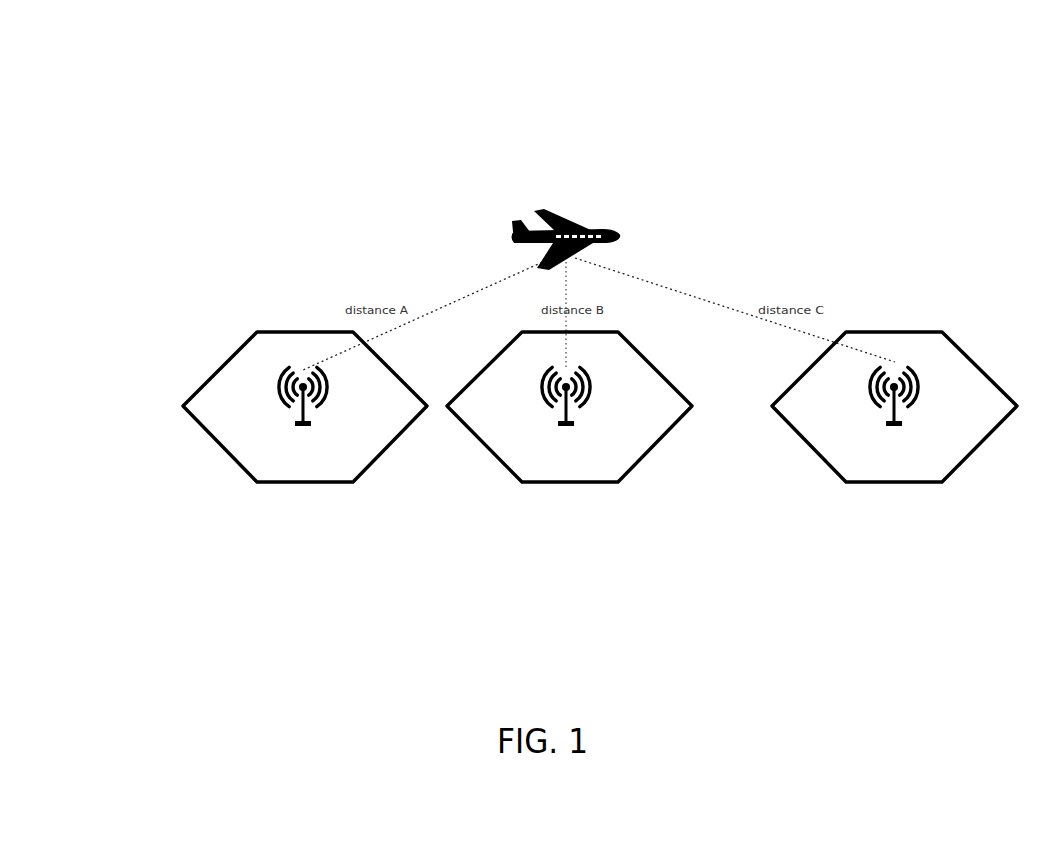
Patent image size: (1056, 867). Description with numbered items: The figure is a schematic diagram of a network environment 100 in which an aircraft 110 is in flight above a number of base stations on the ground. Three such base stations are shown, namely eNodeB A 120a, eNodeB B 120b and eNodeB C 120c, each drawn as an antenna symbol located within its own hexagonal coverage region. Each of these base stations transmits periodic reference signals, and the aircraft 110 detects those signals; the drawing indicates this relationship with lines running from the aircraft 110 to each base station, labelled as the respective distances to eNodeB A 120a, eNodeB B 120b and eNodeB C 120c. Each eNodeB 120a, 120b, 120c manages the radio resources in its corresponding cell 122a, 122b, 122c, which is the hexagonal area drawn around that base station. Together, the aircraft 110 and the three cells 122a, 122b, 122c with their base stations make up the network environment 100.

The network environment 100 is at (907, 147).
The aircraft 110 is at (550, 212).
The eNodeB A 120a is at (268, 372).
The eNodeB B 120b is at (550, 418).
The eNodeB C 120c is at (867, 415).
The cell 122a is at (220, 435).
The cell 122b is at (613, 483).
The cell 122c is at (942, 483).